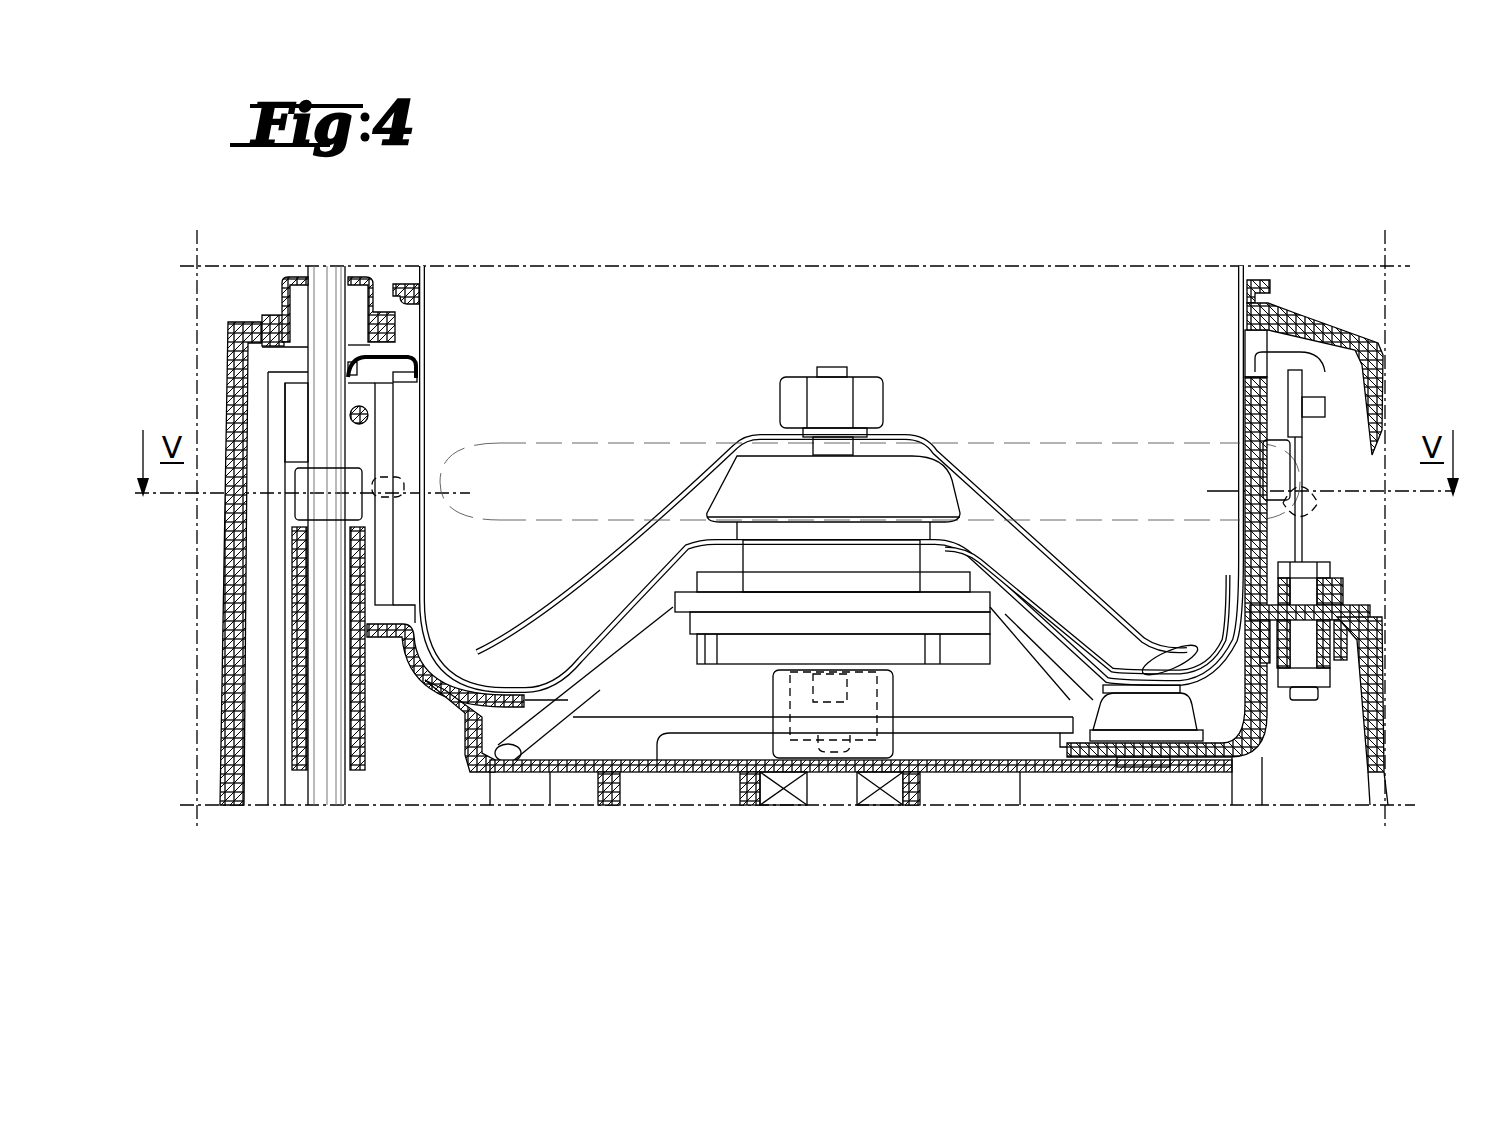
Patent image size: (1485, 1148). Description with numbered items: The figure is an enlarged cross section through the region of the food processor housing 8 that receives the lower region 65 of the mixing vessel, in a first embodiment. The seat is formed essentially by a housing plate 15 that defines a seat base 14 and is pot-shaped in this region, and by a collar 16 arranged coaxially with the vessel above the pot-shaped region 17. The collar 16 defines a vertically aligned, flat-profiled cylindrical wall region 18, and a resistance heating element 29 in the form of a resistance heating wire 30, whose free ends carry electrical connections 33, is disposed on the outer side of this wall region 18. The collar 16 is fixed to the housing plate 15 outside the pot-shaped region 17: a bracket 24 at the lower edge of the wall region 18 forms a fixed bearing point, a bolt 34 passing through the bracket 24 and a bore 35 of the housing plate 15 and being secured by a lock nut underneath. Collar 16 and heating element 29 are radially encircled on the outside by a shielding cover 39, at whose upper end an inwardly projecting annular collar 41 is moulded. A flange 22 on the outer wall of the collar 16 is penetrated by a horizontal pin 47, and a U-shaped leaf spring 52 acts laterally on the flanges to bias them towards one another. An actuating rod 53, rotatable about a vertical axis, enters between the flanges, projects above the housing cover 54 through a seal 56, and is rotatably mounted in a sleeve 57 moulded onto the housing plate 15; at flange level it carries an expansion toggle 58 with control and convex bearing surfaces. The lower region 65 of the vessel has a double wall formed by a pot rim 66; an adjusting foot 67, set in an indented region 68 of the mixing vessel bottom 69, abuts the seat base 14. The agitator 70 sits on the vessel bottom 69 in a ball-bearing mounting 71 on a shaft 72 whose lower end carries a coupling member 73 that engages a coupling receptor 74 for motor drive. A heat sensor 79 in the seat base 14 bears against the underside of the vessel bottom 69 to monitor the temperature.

The housing 8 is at (228, 787).
The seat base 14 is at (667, 760).
The housing plate 15 is at (582, 768).
The collar 16 is at (1262, 380).
The pot-shaped region 17 is at (430, 700).
The cylindrical wall region 18 is at (1248, 420).
The flange 22 is at (298, 402).
The bracket 24 is at (1345, 588).
The resistance heating element 29 is at (1285, 457).
The resistance heating wire 30 is at (1285, 503).
The electrical connections 33 is at (422, 470).
The bolt 34 is at (1328, 572).
The bore 35 is at (1330, 667).
The shielding cover 39 is at (1307, 452).
The annular collar 41 is at (425, 275).
The pin 47 is at (370, 407).
The U-shaped leaf spring 52 is at (295, 790).
The actuating rod 53 is at (322, 298).
The housing cover 54 is at (258, 324).
The seal 56 is at (283, 300).
The sleeve 57 is at (295, 658).
The expansion toggle 58 is at (300, 508).
The lower region of the mixing vessel 65 is at (427, 372).
The pot rim 66 is at (1240, 322).
The adjusting foot 67 is at (520, 740).
The indented region 68 is at (1020, 585).
The mixing vessel bottom 69 is at (1370, 620).
The agitator 70 is at (967, 480).
The ball-bearing mounting 71 is at (752, 477).
The shaft 72 is at (832, 433).
The coupling member 73 is at (852, 712).
The coupling receptor 74 is at (778, 723).
The heat sensor 79 is at (1128, 708).